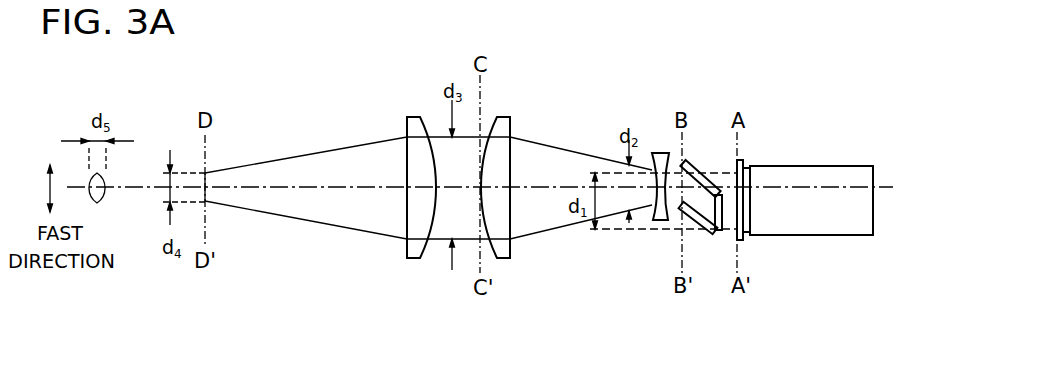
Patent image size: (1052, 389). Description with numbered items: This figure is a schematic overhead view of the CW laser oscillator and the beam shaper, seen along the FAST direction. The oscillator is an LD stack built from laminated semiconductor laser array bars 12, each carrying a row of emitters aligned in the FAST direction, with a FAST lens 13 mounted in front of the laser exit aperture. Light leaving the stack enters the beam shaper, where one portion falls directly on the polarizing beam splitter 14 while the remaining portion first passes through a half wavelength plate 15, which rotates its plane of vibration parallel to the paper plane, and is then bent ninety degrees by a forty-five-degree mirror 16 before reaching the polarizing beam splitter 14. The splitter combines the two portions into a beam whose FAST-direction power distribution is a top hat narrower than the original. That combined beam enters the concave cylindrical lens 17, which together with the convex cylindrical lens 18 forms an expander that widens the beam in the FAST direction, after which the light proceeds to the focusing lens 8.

The focusing lens 8 is at (410, 117).
The semiconductor laser array bar 12 is at (804, 166).
The FAST lens 13 is at (741, 160).
The polarizing beam splitter 14 is at (695, 163).
The ½ wavelength plate 15 is at (716, 195).
The 45-degree mirror 16 is at (693, 228).
The concave cylindrical lens 17 is at (660, 153).
The convex cylindrical lens 18 is at (505, 117).